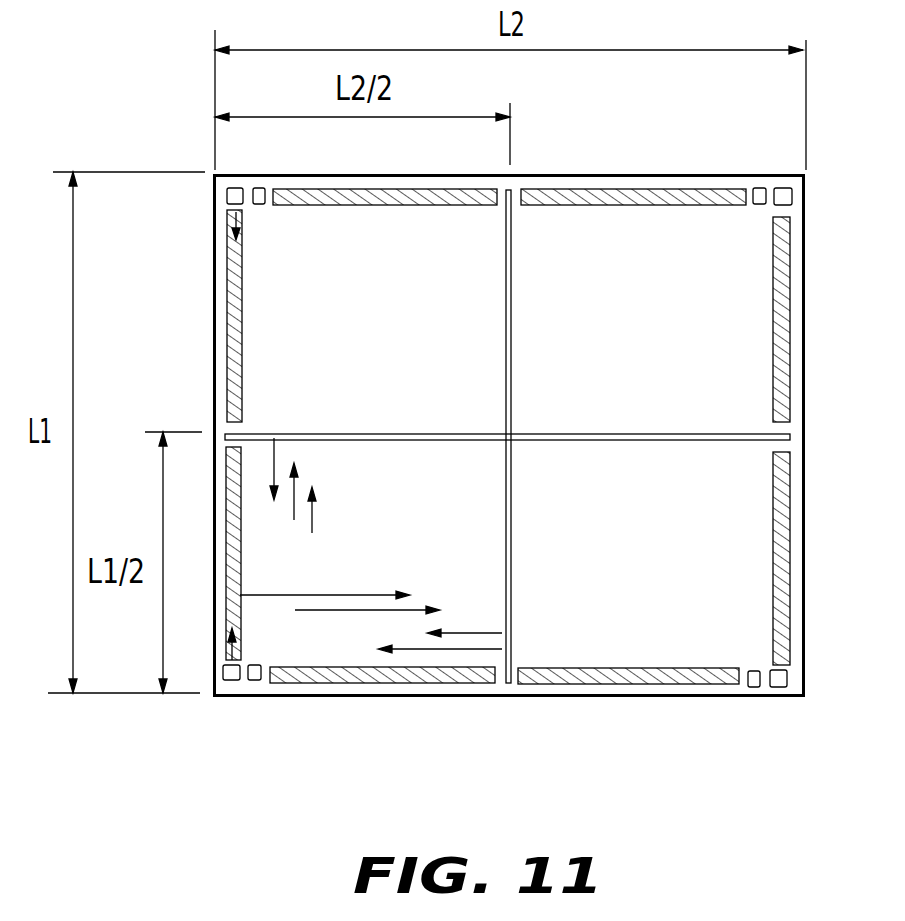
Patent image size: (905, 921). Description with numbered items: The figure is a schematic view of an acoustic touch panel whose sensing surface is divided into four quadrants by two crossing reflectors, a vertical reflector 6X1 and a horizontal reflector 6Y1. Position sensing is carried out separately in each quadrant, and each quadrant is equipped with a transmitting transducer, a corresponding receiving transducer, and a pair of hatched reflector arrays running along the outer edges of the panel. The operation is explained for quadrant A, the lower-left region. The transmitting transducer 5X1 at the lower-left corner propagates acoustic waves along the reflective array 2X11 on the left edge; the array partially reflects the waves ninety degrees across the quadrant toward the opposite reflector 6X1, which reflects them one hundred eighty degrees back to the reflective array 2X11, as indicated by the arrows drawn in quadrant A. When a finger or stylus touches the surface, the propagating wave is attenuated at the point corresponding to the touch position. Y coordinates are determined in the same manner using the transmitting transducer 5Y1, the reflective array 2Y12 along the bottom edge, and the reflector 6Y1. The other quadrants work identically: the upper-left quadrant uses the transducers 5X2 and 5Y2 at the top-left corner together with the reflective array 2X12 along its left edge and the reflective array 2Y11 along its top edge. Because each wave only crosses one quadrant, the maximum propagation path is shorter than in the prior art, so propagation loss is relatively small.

The transducer 5X2 is at (226, 195).
The transducer 5Y2 is at (259, 187).
The transmitting transducer 5X1 is at (229, 683).
The transmitting transducer 5Y1 is at (255, 683).
The reflective array 2X12 is at (229, 285).
The reflective array 2X11 is at (241, 462).
The reflective array 2Y11 is at (420, 205).
The reflective array 2Y12 is at (437, 683).
The reflector 6Y1 is at (427, 434).
The reflector 6X1 is at (511, 535).
The quadrant A is at (466, 493).